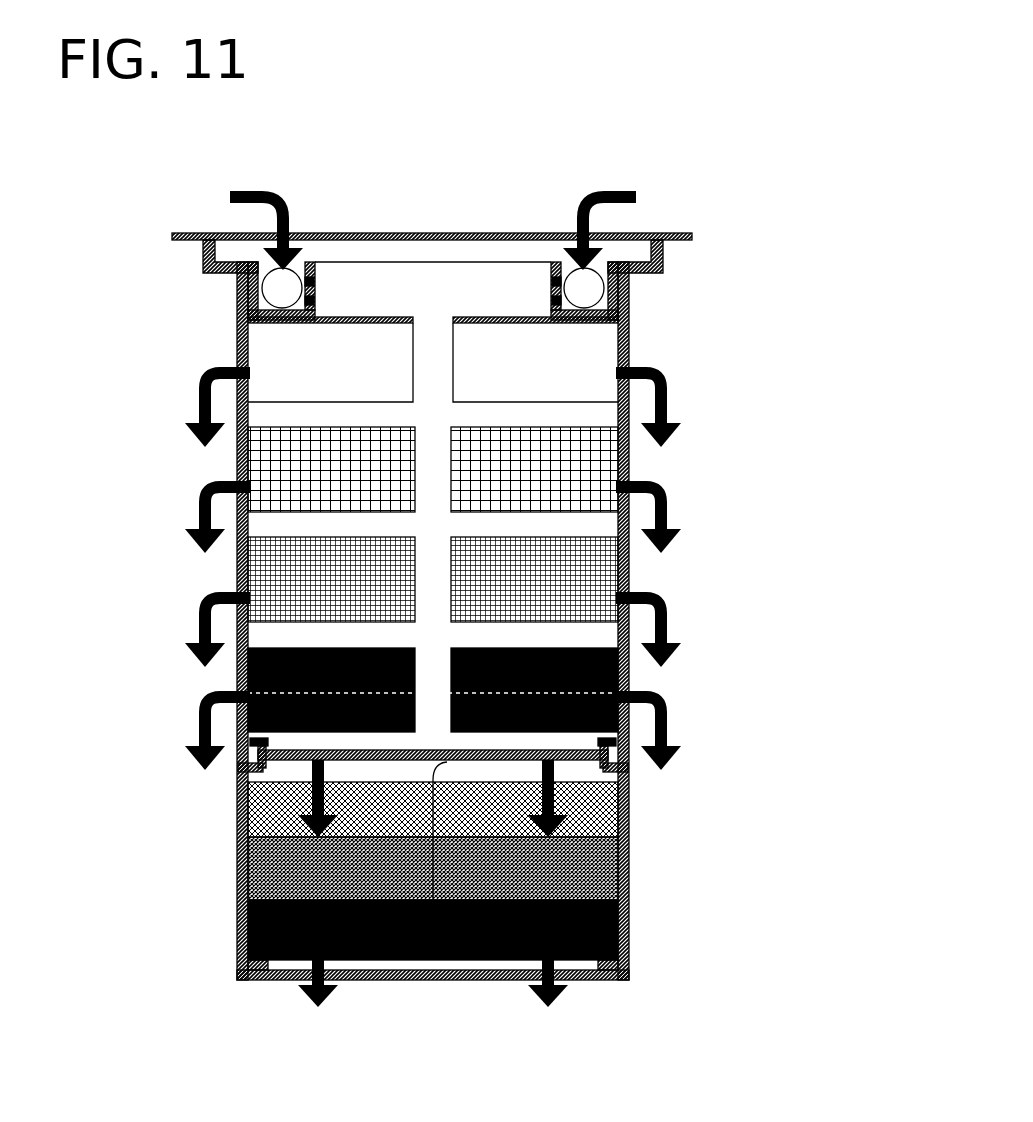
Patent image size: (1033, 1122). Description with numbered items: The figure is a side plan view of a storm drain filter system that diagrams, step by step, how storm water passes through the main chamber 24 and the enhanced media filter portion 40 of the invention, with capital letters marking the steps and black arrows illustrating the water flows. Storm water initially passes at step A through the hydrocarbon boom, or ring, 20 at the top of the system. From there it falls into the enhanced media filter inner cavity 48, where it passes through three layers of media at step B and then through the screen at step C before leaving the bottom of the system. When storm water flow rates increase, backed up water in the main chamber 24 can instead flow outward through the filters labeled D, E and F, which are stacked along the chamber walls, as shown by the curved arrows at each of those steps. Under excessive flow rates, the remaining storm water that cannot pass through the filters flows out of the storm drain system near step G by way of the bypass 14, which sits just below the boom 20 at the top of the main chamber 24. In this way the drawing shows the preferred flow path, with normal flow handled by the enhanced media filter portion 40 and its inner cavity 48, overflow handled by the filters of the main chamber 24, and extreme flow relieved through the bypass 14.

The bypass 14 is at (580, 357).
The hydrocarbon boom 20 is at (603, 263).
The main chamber 24 is at (135, 270).
The enhanced media filter portion 40 is at (467, 862).
The enhanced media filter inner cavity 48 is at (557, 880).
The initial entry step A is at (417, 229).
The media layers step B is at (428, 868).
The screen step C is at (433, 986).
The first chamber filter step D is at (420, 737).
The second chamber filter step E is at (422, 635).
The third chamber filter step F is at (424, 527).
The bypass step G is at (422, 410).